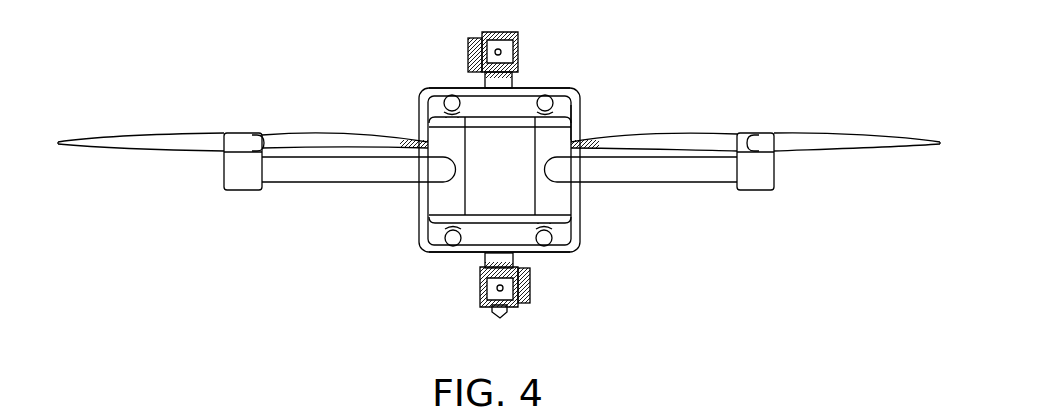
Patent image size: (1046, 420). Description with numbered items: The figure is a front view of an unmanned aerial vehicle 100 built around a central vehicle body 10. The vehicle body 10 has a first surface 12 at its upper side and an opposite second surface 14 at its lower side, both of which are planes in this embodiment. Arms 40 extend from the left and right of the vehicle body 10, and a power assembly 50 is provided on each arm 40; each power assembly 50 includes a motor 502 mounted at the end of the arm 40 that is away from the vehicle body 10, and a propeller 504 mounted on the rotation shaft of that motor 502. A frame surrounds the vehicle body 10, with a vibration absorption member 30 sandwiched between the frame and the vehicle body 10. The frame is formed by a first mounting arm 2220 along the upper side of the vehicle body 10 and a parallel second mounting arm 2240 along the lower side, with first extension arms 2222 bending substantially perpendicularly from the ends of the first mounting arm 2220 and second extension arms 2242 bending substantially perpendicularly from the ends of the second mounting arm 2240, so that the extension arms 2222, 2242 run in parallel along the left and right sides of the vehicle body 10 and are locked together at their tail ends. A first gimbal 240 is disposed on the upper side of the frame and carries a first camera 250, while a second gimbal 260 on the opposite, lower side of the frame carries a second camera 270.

The unmanned aerial vehicle 100 is at (712, 80).
The vehicle body 10 is at (575, 210).
The first surface 12 is at (515, 117).
The second surface 14 is at (479, 225).
The vibration absorption member 30 is at (453, 96).
The arm 40 is at (672, 184).
The power assembly 50 is at (499, 178).
The motor 502 is at (766, 190).
The propeller 504 is at (803, 145).
The first gimbal 240 is at (473, 50).
The first camera 250 is at (500, 32).
The second gimbal 260 is at (531, 294).
The second camera 270 is at (501, 312).
The first mounting arm 2220 is at (570, 88).
The first extension arm 2222 is at (580, 103).
The second mounting arm 2240 is at (563, 253).
The second extension arm 2242 is at (577, 242).